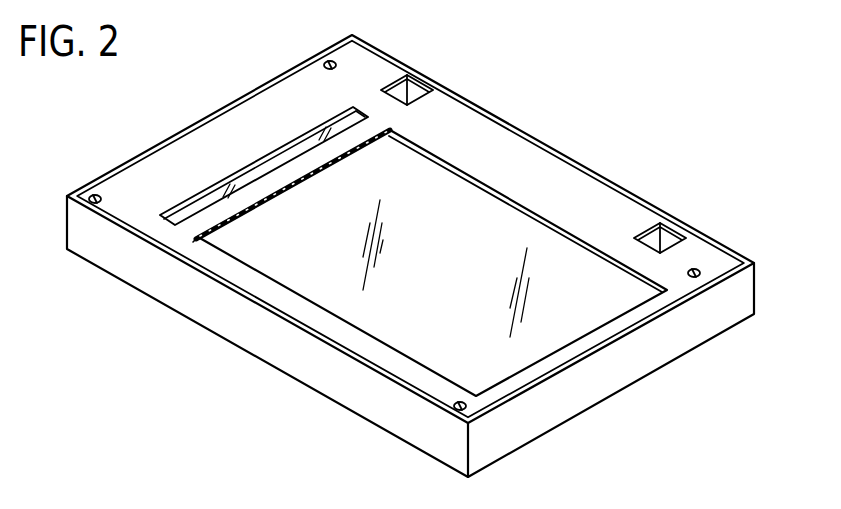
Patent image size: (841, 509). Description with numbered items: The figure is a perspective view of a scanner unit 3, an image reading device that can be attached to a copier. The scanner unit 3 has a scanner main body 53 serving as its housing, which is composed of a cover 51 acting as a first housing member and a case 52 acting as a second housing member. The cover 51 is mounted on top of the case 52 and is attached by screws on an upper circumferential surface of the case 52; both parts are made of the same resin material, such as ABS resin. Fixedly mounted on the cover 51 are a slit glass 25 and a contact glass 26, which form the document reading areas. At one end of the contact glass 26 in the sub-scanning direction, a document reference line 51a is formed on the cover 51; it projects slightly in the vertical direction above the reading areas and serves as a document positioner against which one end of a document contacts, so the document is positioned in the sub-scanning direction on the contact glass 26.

The scanner unit 3 is at (566, 114).
The slit glass 25 is at (277, 162).
The contact glass 26 is at (433, 173).
The cover 51 is at (384, 371).
The document reference line 51a is at (300, 184).
The case 52 is at (567, 404).
The scanner main body 53 is at (627, 216).